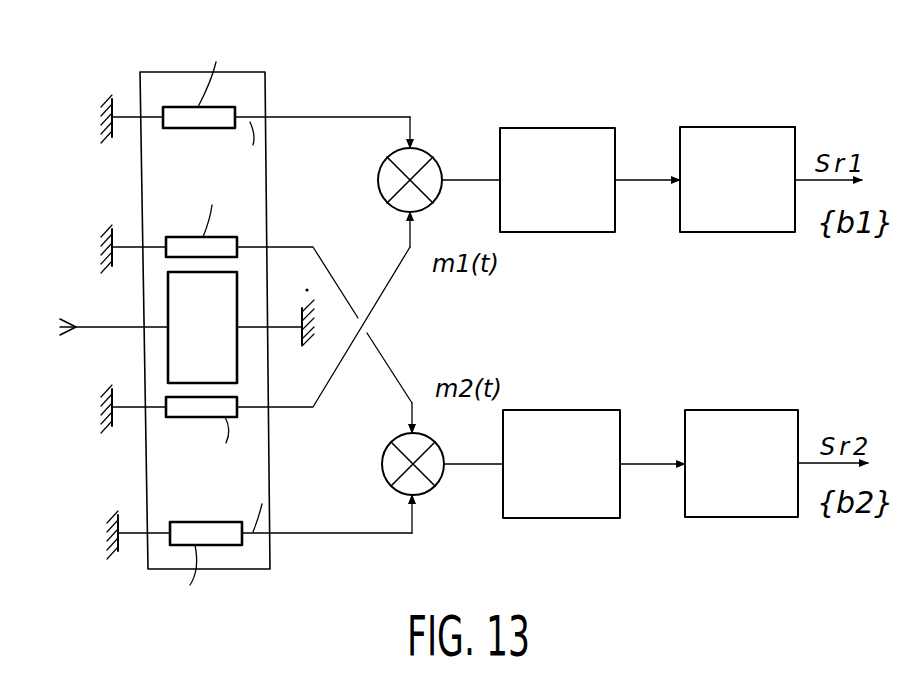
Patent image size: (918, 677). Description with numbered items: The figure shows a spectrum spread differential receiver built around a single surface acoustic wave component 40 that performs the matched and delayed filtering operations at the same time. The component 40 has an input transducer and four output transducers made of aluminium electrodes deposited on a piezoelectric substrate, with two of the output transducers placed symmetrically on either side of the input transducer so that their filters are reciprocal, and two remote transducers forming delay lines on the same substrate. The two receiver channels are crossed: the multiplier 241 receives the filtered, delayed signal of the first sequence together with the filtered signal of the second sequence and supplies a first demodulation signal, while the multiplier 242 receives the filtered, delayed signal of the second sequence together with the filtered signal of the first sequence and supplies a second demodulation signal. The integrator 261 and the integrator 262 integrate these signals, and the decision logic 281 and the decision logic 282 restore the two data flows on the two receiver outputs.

The surface acoustic wave component 40 is at (245, 572).
The multiplier 241 is at (418, 157).
The multiplier 242 is at (428, 488).
The integrator 261 is at (583, 128).
The integrator 262 is at (588, 508).
The decision logic 281 is at (767, 133).
The decision logic 282 is at (773, 512).